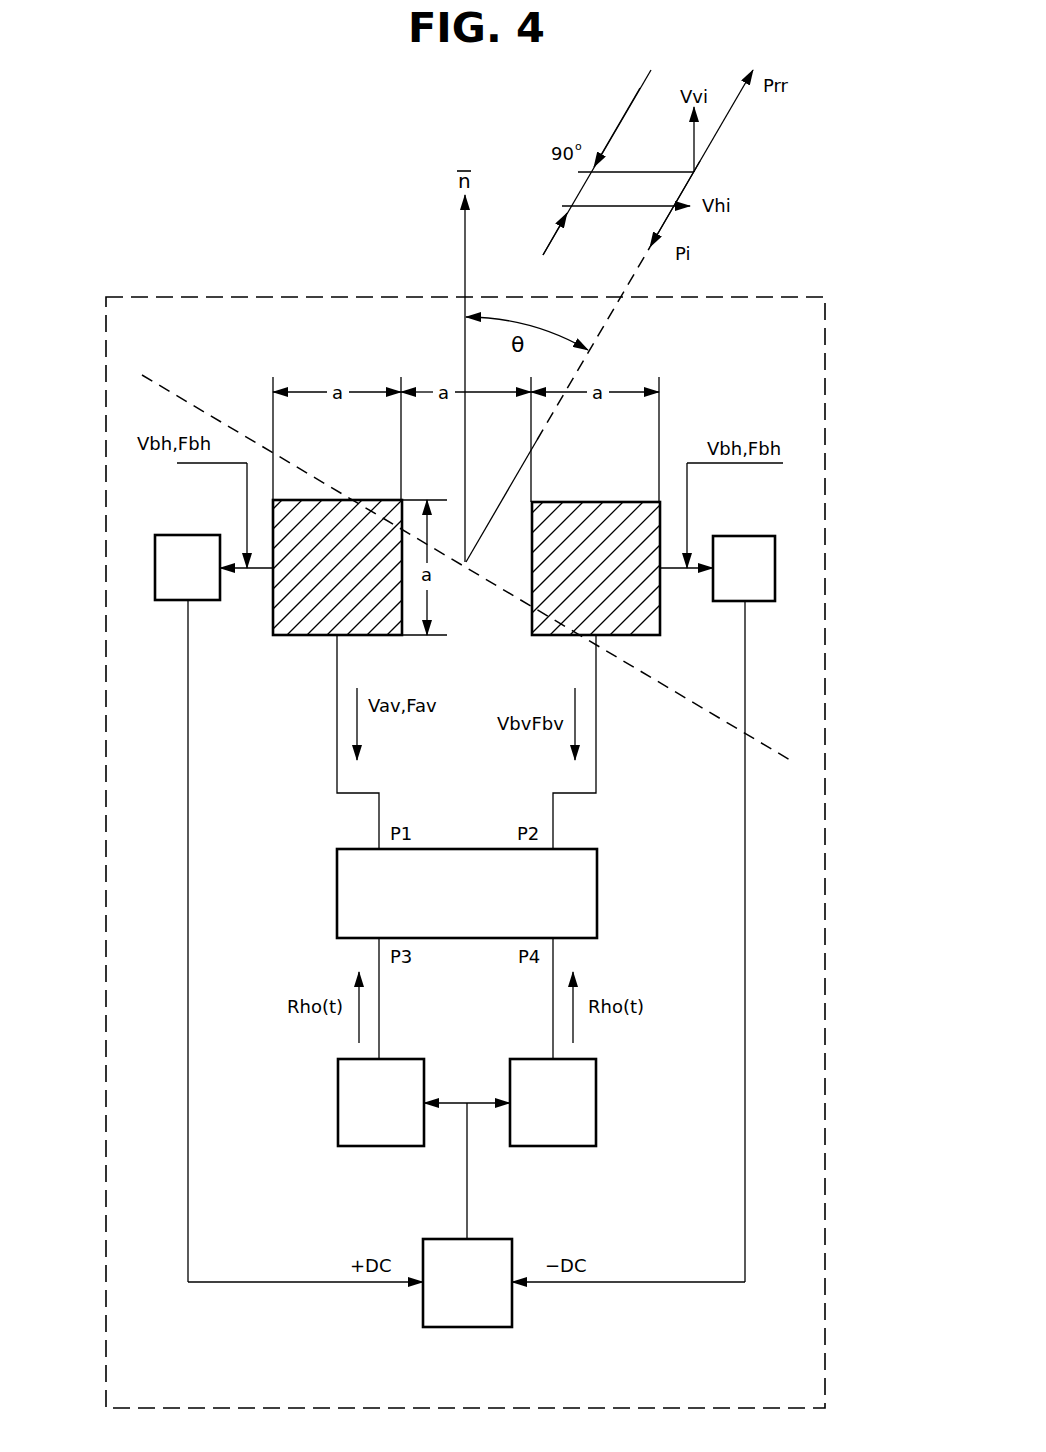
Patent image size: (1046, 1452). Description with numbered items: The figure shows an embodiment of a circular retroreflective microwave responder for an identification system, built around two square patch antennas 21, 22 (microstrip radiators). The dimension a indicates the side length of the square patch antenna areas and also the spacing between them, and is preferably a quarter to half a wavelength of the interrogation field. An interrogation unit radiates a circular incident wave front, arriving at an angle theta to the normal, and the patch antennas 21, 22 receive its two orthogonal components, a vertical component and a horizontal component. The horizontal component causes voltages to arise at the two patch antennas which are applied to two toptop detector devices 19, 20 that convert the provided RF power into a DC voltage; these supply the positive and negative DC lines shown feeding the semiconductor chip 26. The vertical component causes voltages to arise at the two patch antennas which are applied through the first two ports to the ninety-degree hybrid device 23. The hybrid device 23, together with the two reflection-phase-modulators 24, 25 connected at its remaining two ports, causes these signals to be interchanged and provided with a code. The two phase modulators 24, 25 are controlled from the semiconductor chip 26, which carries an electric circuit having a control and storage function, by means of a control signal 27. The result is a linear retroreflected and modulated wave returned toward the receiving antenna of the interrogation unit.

The detector device 19 is at (189, 541).
The detector device 20 is at (743, 543).
The patch antenna 21 is at (278, 606).
The patch antenna 22 is at (655, 606).
The 90° hybrid device 23 is at (584, 896).
The reflection-phase-modulator 24 is at (590, 1106).
The reflection-phase-modulator 25 is at (345, 1106).
The semiconductor chip 26 is at (468, 1318).
The control signal 27 is at (468, 1173).